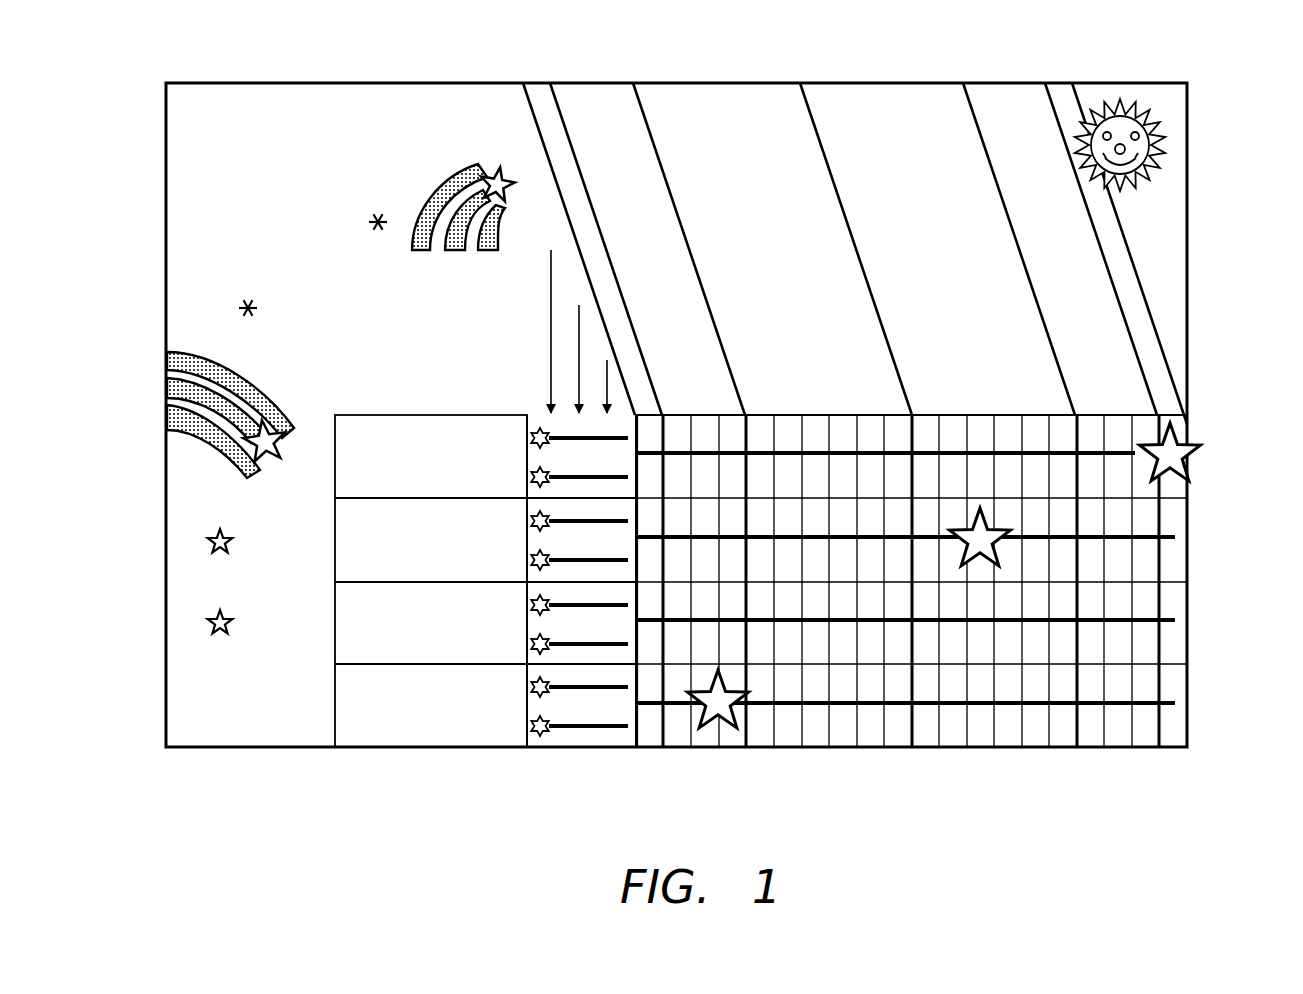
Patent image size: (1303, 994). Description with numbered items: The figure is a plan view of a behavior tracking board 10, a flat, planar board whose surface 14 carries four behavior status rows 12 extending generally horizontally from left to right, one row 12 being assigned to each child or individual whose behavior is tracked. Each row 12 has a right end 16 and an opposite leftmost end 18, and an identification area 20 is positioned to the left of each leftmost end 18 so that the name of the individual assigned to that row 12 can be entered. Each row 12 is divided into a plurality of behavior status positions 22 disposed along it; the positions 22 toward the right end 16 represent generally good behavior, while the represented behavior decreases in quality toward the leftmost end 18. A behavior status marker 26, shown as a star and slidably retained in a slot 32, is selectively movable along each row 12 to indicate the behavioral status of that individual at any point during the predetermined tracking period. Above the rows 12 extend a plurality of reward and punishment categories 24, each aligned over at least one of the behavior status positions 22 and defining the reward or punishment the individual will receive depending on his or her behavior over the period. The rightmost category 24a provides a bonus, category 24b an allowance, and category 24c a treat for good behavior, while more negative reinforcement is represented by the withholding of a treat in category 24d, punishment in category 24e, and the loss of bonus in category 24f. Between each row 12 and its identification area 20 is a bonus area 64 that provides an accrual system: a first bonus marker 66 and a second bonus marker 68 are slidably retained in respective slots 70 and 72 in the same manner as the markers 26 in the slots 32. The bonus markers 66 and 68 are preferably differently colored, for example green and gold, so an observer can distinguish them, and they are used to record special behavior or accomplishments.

The behavior tracking board 10 is at (494, 768).
The behavior status row 12 is at (1145, 582).
The surface 14 is at (315, 154).
The right end 16 is at (1148, 638).
The leftmost end 18 is at (642, 748).
The identification area 20 is at (335, 457).
The behavior status position 22 is at (812, 748).
The reward and punishment categories 24 is at (1152, 224).
The bonus category 24a is at (1053, 92).
The allowance category 24b is at (1028, 95).
The treat category 24c is at (910, 98).
The withholding of treat category 24d is at (738, 100).
The punishment category 24e is at (597, 100).
The loss of bonus category 24f is at (528, 95).
The behavior status marker 26 is at (1185, 445).
The slot 32 is at (873, 456).
The bonus area 64 is at (630, 472).
The first bonus marker 66 is at (530, 437).
The second bonus marker 68 is at (530, 475).
The first slot 70 is at (570, 436).
The second slot 72 is at (570, 479).